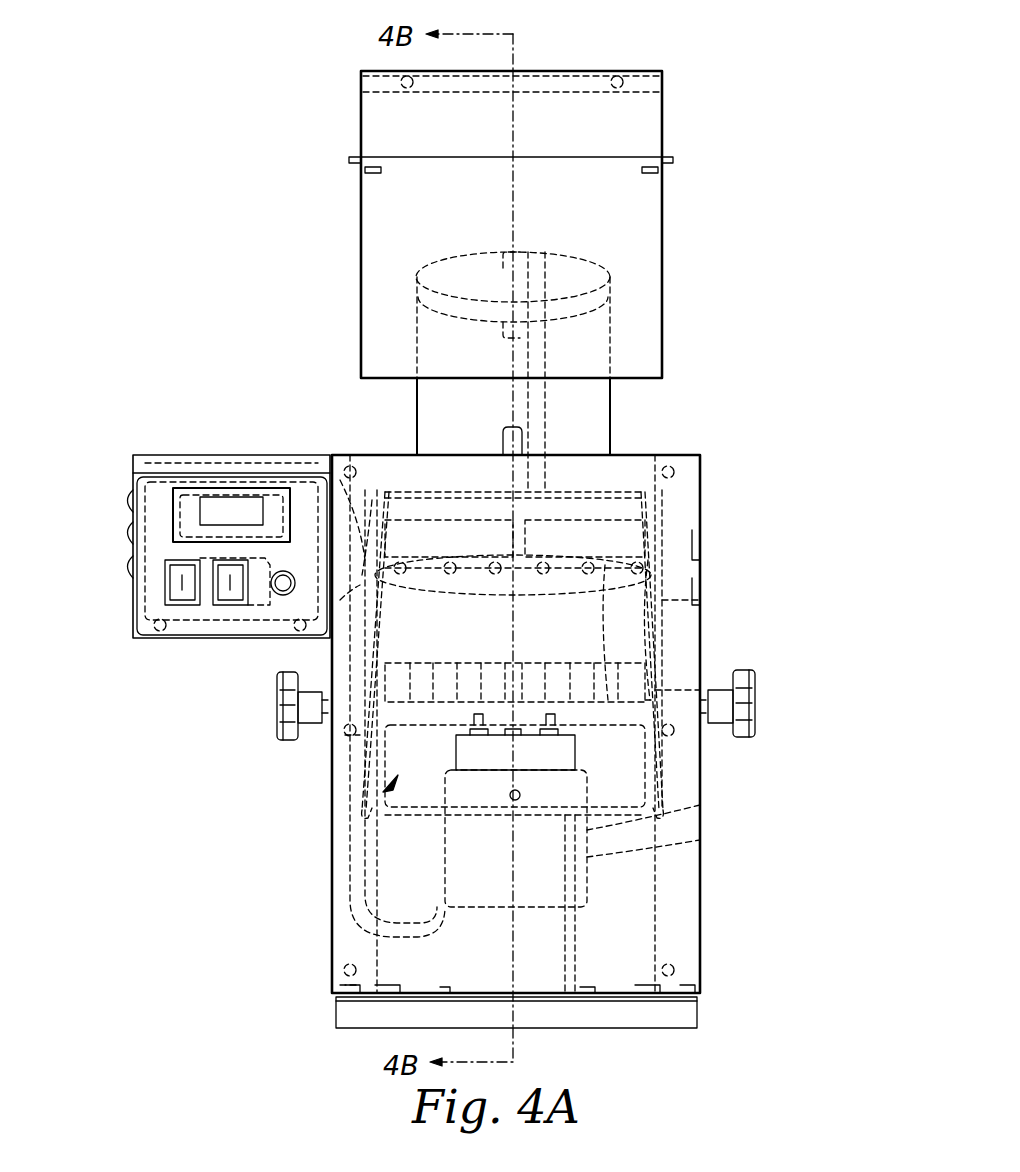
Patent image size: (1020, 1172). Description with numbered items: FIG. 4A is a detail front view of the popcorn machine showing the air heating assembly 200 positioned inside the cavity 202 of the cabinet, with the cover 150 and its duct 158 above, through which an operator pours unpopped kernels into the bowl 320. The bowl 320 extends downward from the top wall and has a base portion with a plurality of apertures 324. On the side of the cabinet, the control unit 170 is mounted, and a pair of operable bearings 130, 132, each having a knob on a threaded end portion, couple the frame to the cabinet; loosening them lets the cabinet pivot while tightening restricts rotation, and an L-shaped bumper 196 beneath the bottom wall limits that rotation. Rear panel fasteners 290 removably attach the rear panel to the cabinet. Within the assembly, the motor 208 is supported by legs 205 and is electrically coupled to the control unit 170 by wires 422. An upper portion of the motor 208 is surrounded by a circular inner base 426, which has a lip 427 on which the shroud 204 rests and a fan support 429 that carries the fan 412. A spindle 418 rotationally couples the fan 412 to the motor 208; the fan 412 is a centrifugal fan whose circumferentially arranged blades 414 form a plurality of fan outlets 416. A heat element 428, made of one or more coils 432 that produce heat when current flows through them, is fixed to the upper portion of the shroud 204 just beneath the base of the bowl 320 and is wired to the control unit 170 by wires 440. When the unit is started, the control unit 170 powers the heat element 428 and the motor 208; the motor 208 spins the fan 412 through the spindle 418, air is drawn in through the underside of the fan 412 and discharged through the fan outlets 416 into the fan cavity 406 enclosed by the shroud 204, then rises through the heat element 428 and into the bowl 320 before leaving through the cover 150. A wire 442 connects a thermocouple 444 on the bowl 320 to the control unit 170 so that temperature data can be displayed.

The operable bearing 130 is at (277, 712).
The operable bearing 132 is at (755, 705).
The cover 150 is at (711, 168).
The duct 158 is at (593, 387).
The control unit 170 is at (135, 608).
The bumper 196 is at (640, 1022).
The air heating assembly 200 is at (360, 800).
The cavity 202 is at (640, 935).
The shroud 204 is at (660, 615).
The leg 205 is at (660, 813).
The motor 208 is at (640, 852).
The rear panel fastener 290 is at (348, 970).
The bowl 320 is at (550, 522).
The aperture 324 is at (600, 522).
The fan cavity 406 is at (662, 585).
The fan 412 is at (655, 690).
The blade 414 is at (425, 660).
The fan outlet 416 is at (600, 680).
The spindle 418 is at (650, 700).
The wire 422 is at (348, 850).
The inner base 426 is at (685, 780).
The lip 427 is at (665, 810).
The heat element 428 is at (552, 585).
The fan support 429 is at (345, 735).
The coil 432 is at (640, 592).
The wire 440 is at (372, 500).
The wire 442 is at (328, 480).
The thermocouple 444 is at (470, 522).